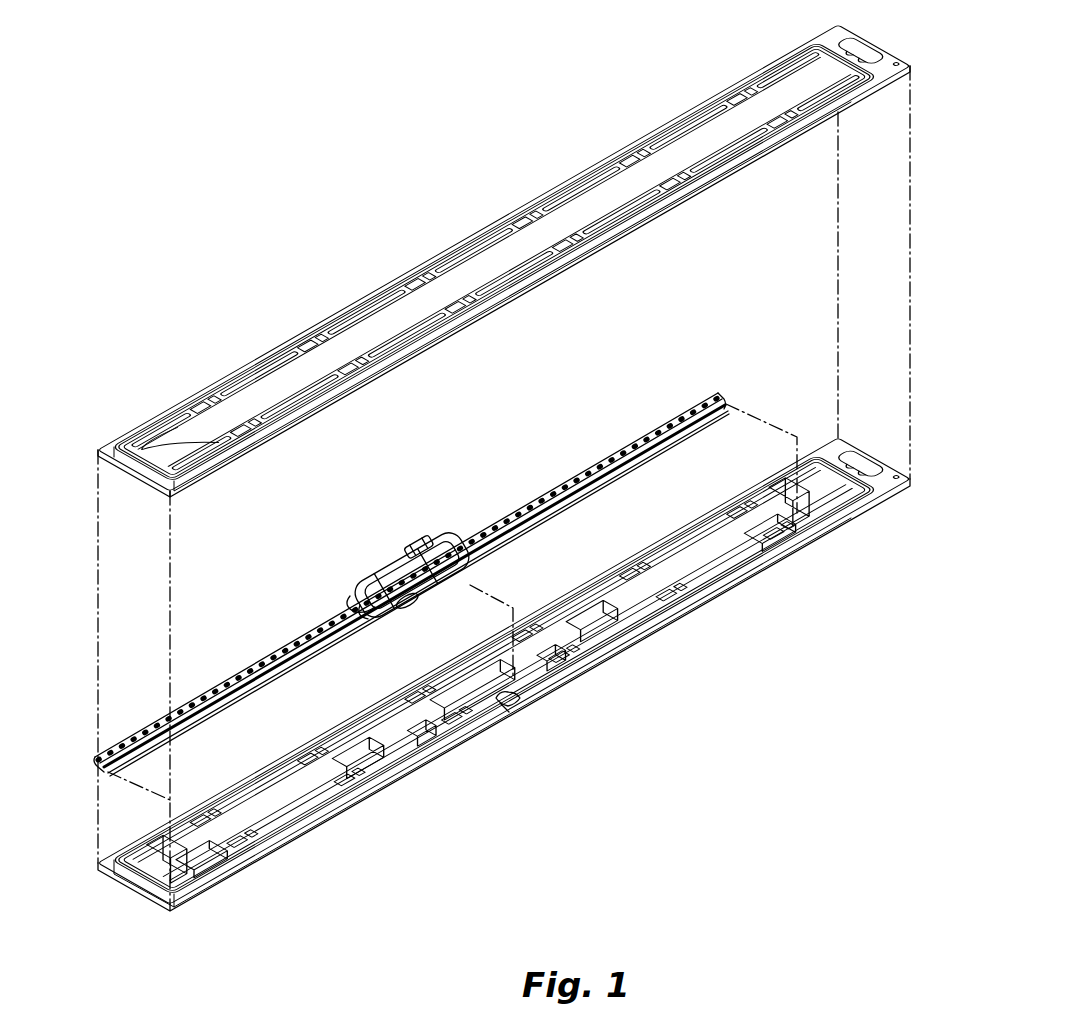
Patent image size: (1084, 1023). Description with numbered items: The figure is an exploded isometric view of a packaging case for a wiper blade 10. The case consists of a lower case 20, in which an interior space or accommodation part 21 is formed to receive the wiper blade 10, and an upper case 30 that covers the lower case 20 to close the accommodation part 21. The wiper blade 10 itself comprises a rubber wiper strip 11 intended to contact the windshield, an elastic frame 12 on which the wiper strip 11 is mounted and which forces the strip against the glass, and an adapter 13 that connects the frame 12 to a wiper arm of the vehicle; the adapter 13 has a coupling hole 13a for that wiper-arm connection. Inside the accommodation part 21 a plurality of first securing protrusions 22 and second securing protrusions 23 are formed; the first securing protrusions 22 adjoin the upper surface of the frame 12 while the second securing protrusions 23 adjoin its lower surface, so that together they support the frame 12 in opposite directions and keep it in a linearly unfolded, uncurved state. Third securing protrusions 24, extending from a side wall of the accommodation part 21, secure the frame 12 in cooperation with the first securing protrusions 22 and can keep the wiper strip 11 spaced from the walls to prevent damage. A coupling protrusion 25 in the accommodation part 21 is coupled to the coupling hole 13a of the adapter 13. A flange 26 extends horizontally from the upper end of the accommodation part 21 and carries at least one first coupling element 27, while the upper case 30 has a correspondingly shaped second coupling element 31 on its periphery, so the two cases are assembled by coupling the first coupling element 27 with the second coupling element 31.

The wiper blade 10 is at (411, 584).
The wiper strip 11 is at (231, 705).
The frame 12 is at (253, 672).
The adapter 13 is at (413, 538).
The coupling hole 13a is at (438, 538).
The lower case 20 is at (504, 682).
The accommodation part 21 is at (254, 861).
The first securing protrusions 22 is at (436, 728).
The second securing protrusions 23 is at (165, 880).
The third securing protrusions 24 is at (452, 690).
The coupling protrusion 25 is at (513, 705).
The flange 26 is at (617, 553).
The first coupling element 27 is at (567, 590).
The upper case 30 is at (450, 199).
The second coupling element 31 is at (364, 296).